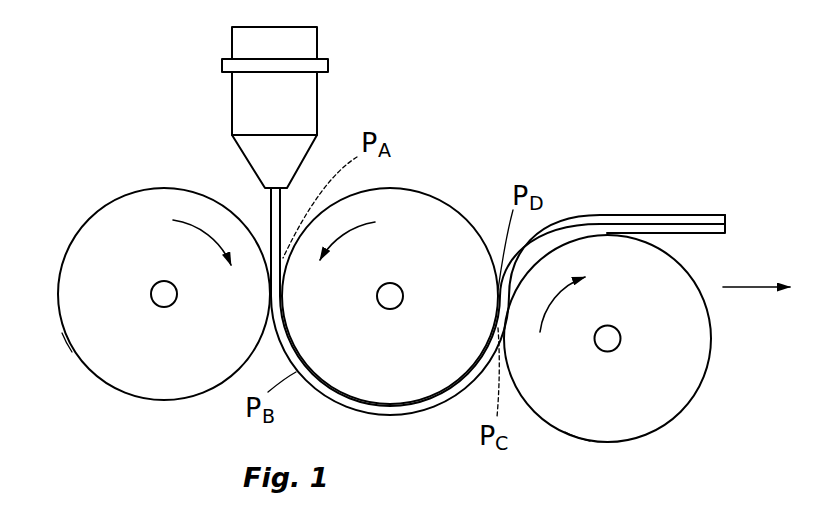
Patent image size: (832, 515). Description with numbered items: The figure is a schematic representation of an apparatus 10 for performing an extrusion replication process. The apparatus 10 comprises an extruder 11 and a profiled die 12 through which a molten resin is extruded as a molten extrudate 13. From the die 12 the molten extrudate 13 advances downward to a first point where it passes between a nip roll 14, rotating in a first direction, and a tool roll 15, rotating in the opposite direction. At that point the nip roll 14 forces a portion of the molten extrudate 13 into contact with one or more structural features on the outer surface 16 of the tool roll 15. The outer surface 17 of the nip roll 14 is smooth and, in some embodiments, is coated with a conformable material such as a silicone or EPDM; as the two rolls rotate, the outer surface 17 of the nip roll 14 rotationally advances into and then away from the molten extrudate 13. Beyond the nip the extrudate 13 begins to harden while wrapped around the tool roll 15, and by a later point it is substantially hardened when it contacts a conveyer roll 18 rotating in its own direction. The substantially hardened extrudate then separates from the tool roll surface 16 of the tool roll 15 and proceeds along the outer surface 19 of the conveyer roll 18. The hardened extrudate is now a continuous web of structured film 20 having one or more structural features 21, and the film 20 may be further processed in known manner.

The apparatus 10 is at (449, 92).
The extruder 11 is at (232, 95).
The profiled die 12 is at (313, 149).
The molten extrudate 13 is at (267, 209).
The nip roll 14 is at (102, 225).
The tool roll 15 is at (417, 378).
The outer surface of tool roll 16 is at (447, 202).
The outer surface of nip roll 17 is at (63, 333).
The conveyer roll 18 is at (660, 408).
The outer surface of conveyer roll 19 is at (575, 436).
The structured film 20 is at (738, 222).
The structural features 21 is at (665, 216).